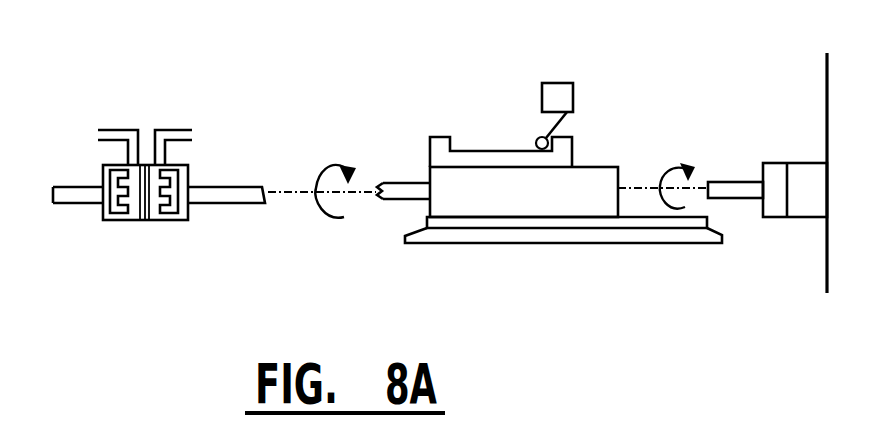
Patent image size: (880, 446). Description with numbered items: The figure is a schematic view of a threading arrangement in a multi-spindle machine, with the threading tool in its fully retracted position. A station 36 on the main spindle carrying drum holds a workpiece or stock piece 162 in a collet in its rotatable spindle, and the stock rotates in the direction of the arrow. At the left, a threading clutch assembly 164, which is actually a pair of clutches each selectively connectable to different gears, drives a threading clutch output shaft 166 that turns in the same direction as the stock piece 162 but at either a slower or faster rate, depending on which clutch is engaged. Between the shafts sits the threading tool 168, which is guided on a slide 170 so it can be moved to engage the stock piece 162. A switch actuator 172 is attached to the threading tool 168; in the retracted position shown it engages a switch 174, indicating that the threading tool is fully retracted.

The station 36 is at (780, 163).
The stock piece 162 is at (733, 182).
The threading clutch assembly 164 is at (142, 220).
The threading clutch output shaft 166 is at (243, 187).
The threading tool 168 is at (558, 203).
The slide 170 is at (517, 243).
The switch actuator 172 is at (438, 137).
The switch 174 is at (560, 83).